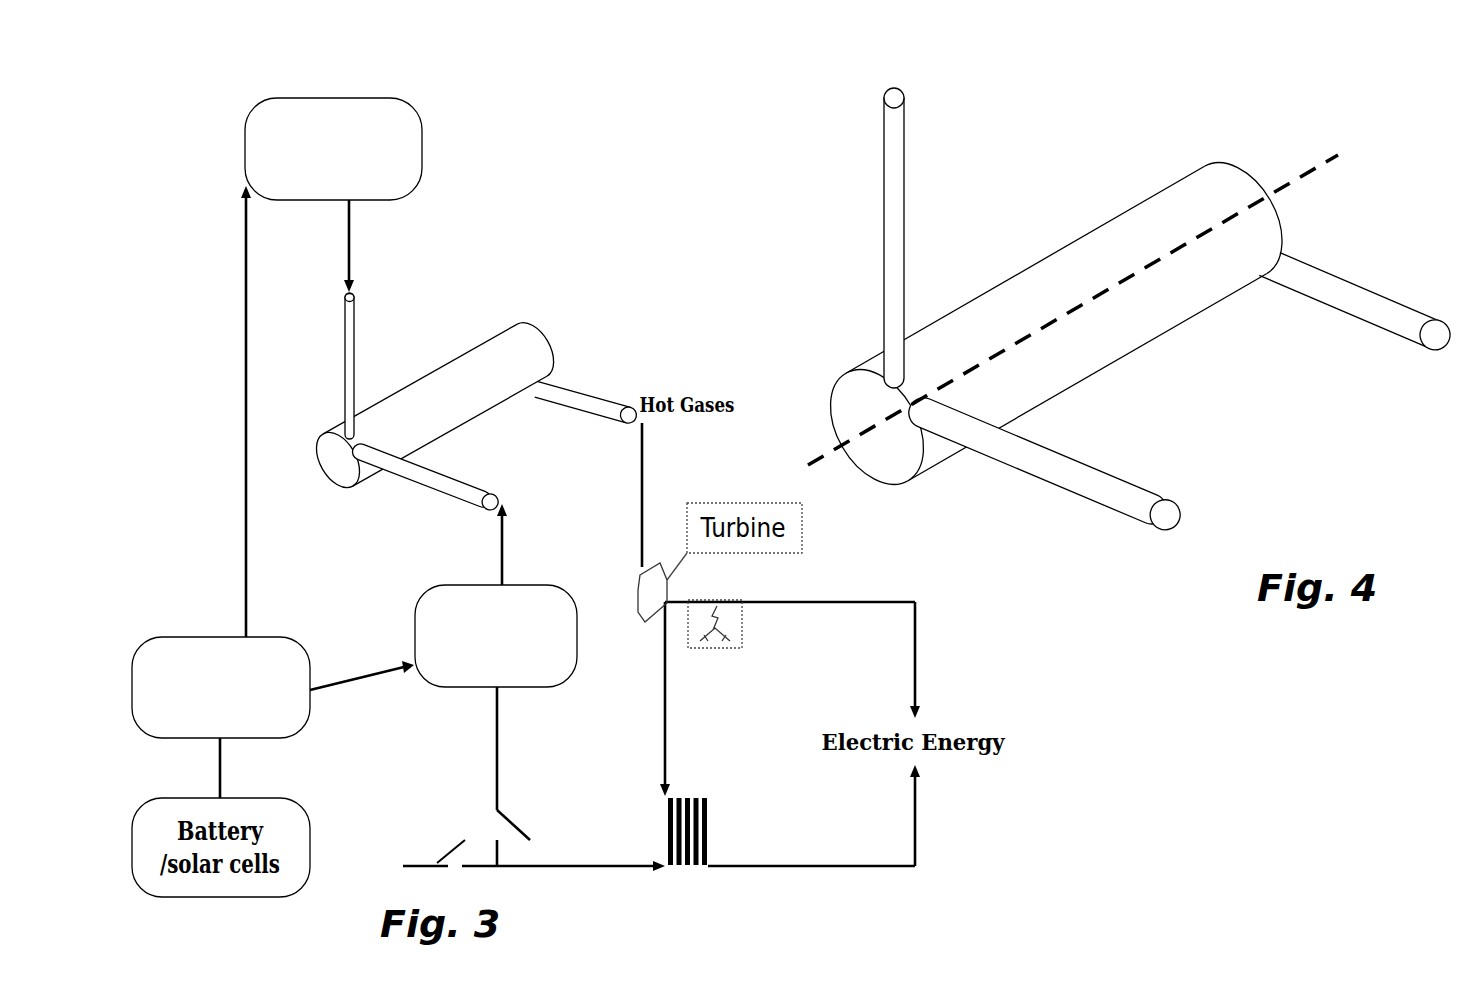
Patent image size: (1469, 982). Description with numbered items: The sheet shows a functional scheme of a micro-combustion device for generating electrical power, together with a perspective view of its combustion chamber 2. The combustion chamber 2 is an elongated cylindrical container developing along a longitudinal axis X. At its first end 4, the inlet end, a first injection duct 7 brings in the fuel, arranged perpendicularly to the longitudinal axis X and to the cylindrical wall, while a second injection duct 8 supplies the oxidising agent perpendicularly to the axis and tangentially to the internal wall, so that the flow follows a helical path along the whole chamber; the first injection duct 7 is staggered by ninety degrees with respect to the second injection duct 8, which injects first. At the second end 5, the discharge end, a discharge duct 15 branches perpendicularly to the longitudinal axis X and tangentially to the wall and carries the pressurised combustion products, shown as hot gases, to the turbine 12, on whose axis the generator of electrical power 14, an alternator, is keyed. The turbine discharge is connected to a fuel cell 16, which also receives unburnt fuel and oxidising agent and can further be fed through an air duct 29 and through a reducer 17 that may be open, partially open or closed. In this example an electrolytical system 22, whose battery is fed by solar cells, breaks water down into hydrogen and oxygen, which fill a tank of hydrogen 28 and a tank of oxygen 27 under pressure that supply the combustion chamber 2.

In FIG. 3, the combustion chamber 2 is at (552, 308).
In FIG. 4, the combustion chamber 2 is at (1098, 329).
In FIG. 4, the first end 4 is at (857, 397).
In FIG. 4, the second end 5 is at (1253, 173).
In FIG. 4, the first injection duct 7 is at (892, 232).
In FIG. 4, the second injection duct 8 is at (988, 450).
In FIG. 3, the turbine 12 is at (657, 610).
In FIG. 3, the generator of electrical power 14 is at (715, 640).
In FIG. 4, the discharge duct 15 is at (1322, 285).
In FIG. 3, the fuel cell 16 is at (700, 837).
In FIG. 3, the reducer 17 is at (498, 835).
In FIG. 3, the electrolytical system 22 is at (178, 660).
In FIG. 3, the tank of oxygen 27 is at (422, 637).
In FIG. 3, the tank of hydrogen 28 is at (383, 145).
In FIG. 3, the air duct 29 is at (403, 865).
In FIG. 4, the longitudinal axis X is at (1153, 263).